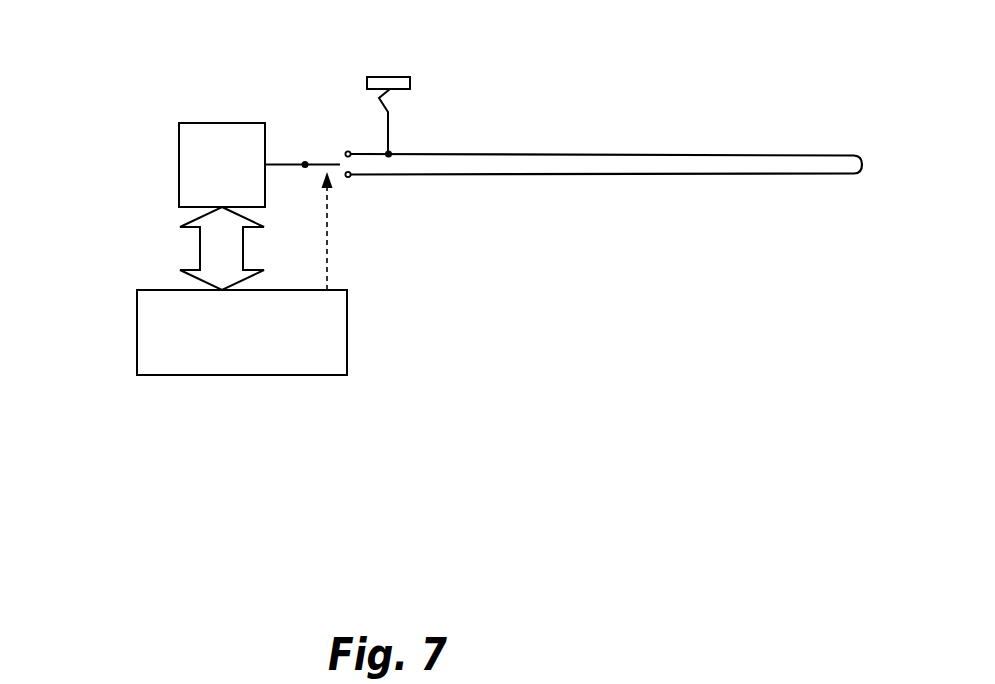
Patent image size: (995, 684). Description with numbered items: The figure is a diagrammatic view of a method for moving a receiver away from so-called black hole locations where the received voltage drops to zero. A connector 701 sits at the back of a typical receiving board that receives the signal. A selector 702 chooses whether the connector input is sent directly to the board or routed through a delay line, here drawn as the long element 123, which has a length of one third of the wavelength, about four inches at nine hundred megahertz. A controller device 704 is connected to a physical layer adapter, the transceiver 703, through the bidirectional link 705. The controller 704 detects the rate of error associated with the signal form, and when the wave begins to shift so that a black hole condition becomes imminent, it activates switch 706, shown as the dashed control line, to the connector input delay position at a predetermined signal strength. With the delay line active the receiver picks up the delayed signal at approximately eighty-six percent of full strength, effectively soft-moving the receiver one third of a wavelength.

The connector 701 is at (417, 83).
The selector 702 is at (327, 152).
The transceiver 703 is at (222, 165).
The controller device 704 is at (242, 332).
The bidirectional data link 705 is at (243, 250).
The switch 706 is at (327, 222).
The cable 123 is at (673, 178).